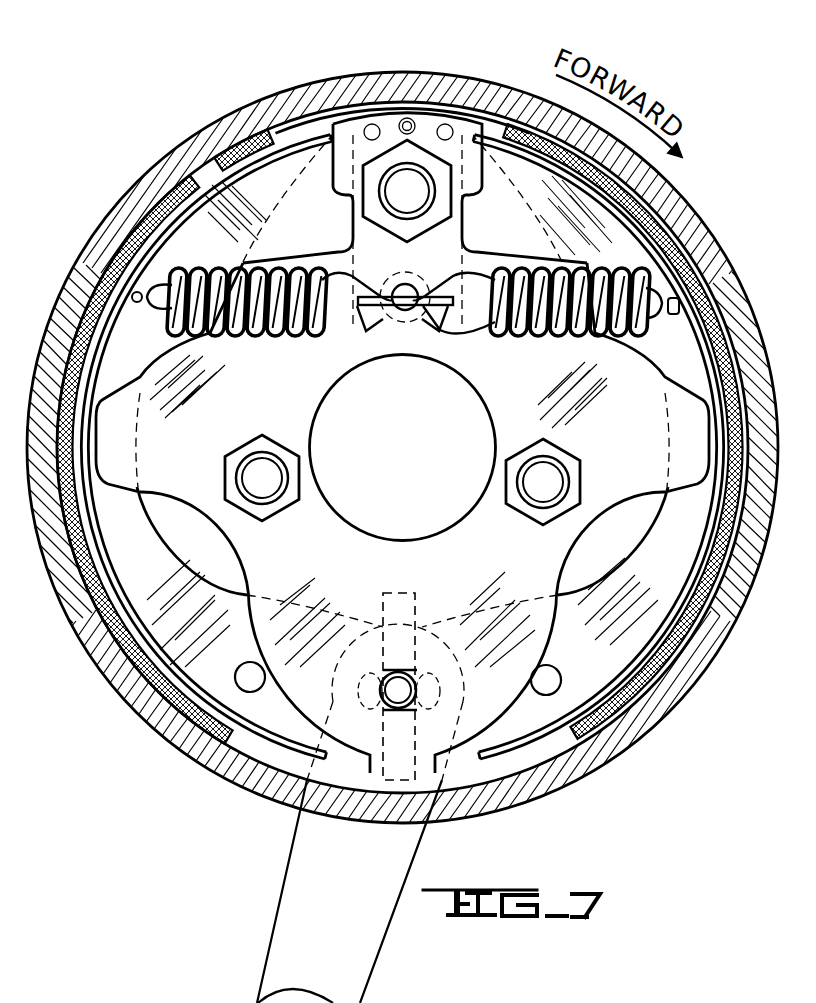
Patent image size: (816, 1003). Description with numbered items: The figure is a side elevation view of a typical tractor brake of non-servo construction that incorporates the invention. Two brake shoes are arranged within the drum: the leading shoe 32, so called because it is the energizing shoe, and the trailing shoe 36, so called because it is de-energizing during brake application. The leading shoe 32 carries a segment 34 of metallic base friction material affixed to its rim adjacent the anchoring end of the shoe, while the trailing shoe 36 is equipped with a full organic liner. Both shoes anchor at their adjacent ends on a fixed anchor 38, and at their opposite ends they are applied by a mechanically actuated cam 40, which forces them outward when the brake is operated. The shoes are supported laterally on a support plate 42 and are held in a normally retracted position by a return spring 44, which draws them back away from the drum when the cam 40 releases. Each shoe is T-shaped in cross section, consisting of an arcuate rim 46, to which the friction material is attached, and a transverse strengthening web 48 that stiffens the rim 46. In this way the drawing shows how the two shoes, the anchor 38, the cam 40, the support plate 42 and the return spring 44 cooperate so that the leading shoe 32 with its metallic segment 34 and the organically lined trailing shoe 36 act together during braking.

The leading shoe 32 is at (125, 585).
The segment of metallic base friction material 34 is at (226, 152).
The trailing shoe 36 is at (633, 230).
The fixed anchor 38 is at (408, 188).
The mechanically actuated cam 40 is at (383, 595).
The support plate 42 is at (512, 423).
The return spring 44 is at (178, 272).
The arcuate rim 46 is at (168, 642).
The transverse strengthening web 48 is at (125, 695).